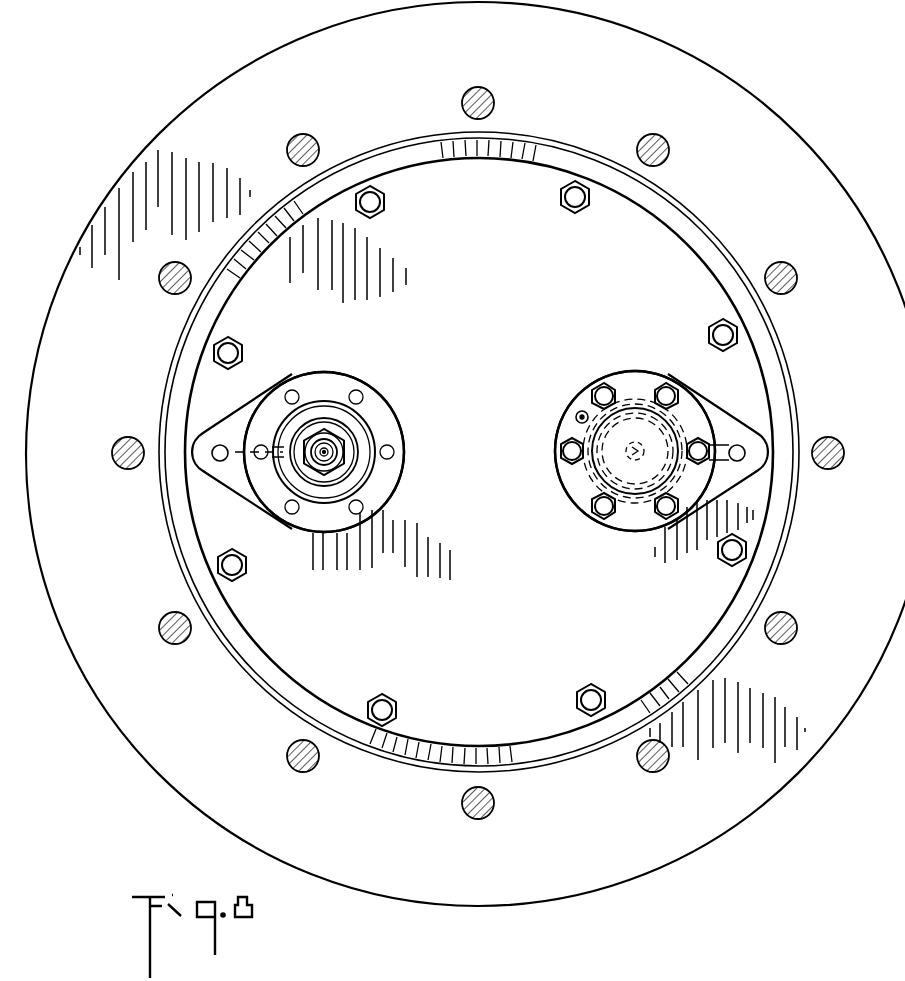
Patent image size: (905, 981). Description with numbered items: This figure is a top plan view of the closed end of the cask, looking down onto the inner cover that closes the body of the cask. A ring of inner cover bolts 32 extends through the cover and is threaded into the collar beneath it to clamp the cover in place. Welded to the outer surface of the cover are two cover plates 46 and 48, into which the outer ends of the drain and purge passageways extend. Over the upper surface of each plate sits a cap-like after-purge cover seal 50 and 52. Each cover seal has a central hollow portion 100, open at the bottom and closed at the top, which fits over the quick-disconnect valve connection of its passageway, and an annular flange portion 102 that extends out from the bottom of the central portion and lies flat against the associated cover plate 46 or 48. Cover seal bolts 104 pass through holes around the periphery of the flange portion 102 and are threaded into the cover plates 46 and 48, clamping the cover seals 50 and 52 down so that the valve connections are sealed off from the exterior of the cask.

The inner cover bolts 32 is at (385, 205).
The cover plate 46 is at (228, 421).
The cover plate 48 is at (730, 409).
The cover seal 50 is at (371, 381).
The cover seal 52 is at (594, 372).
The central hollow portion 100 is at (321, 408).
The annular flange portion 102 is at (385, 412).
The cover seal bolts 104 is at (667, 392).